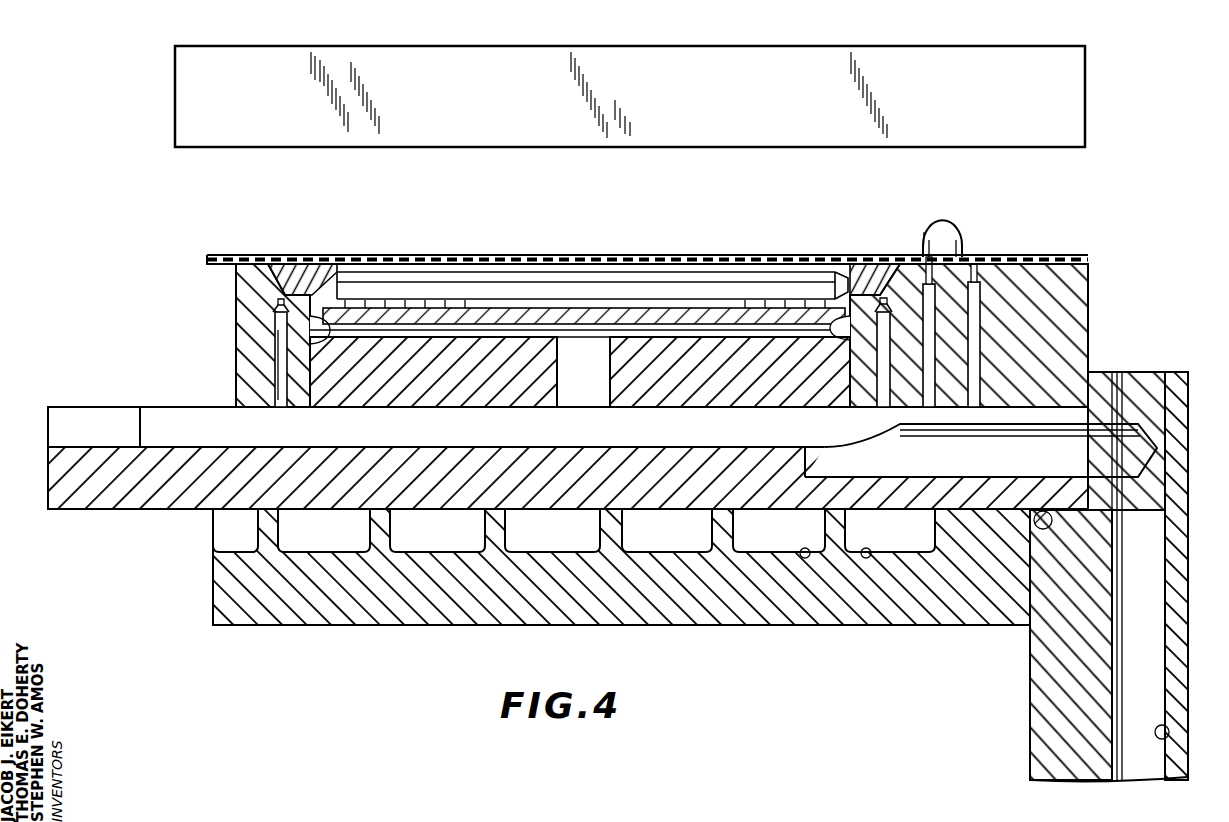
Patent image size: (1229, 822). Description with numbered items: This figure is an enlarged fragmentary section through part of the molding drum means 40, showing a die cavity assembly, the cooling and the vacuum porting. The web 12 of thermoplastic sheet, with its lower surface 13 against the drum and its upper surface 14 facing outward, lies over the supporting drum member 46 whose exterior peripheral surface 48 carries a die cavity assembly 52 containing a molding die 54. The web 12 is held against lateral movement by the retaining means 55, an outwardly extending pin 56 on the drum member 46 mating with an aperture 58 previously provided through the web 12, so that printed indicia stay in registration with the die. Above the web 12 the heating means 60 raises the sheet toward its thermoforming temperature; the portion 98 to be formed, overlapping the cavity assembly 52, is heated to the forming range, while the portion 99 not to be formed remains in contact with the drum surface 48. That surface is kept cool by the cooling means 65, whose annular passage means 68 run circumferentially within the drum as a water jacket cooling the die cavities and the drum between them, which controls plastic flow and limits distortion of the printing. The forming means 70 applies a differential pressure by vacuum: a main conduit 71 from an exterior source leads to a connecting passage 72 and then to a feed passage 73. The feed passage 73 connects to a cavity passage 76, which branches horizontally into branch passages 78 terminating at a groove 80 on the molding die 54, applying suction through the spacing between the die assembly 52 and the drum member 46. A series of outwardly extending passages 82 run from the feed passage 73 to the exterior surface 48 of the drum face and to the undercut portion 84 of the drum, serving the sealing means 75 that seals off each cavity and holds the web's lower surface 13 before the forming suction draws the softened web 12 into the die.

The web 12 is at (207, 257).
The lower surface 13 is at (210, 270).
The upper surface 14 is at (232, 256).
The molding drum means 40 is at (1195, 530).
The supporting drum member 46 is at (1090, 347).
The exterior peripheral surface 48 is at (1085, 264).
The die cavity assembly 52 is at (838, 282).
The molding die 54 is at (358, 288).
The retaining means 55 is at (925, 232).
The pin 56 is at (945, 228).
The aperture 58 is at (963, 258).
The heating means 60 is at (1092, 121).
The cooling means 65 is at (215, 540).
The annular passage means 68 is at (866, 556).
The forming means 70 is at (280, 375).
The main conduit 71 is at (1170, 738).
The connecting passage 72 is at (1075, 468).
The feed passage 73 is at (141, 410).
The sealing means 75 is at (976, 305).
The cavity passage 76 is at (598, 388).
The branch passage 78 is at (520, 333).
The groove 80 is at (298, 330).
The outwardly extending passage 82 is at (280, 348).
The undercut portion 84 is at (274, 270).
The portion to be formed 98 is at (500, 256).
The portion not to be formed 99 is at (252, 258).